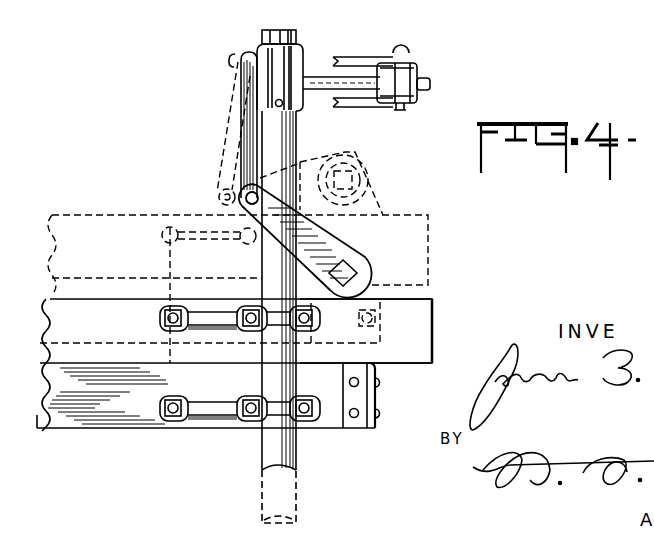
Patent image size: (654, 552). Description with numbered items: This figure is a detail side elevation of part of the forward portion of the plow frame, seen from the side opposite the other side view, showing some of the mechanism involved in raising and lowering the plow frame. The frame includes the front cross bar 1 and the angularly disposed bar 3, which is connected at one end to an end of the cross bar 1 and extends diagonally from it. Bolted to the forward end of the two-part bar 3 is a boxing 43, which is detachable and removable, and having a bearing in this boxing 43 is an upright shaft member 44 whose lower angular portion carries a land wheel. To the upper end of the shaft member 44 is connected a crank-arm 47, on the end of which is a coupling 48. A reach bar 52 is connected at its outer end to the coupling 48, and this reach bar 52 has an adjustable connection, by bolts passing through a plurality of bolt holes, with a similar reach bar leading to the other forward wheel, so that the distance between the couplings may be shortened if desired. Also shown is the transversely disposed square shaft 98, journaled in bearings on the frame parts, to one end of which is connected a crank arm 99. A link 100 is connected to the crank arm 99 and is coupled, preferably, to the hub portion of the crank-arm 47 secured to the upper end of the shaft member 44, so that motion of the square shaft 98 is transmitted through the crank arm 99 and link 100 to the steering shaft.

The front cross bar 1 is at (418, 367).
The angularly disposed bar 3 is at (412, 322).
The boxing 43 is at (230, 395).
The upright shaft member 44 is at (268, 37).
The crank-arm 47 is at (314, 80).
The coupling 48 is at (402, 78).
The reach bar 52 is at (372, 58).
The square shaft 98 is at (352, 268).
The crank arm 99 is at (323, 244).
The link 100 is at (247, 137).